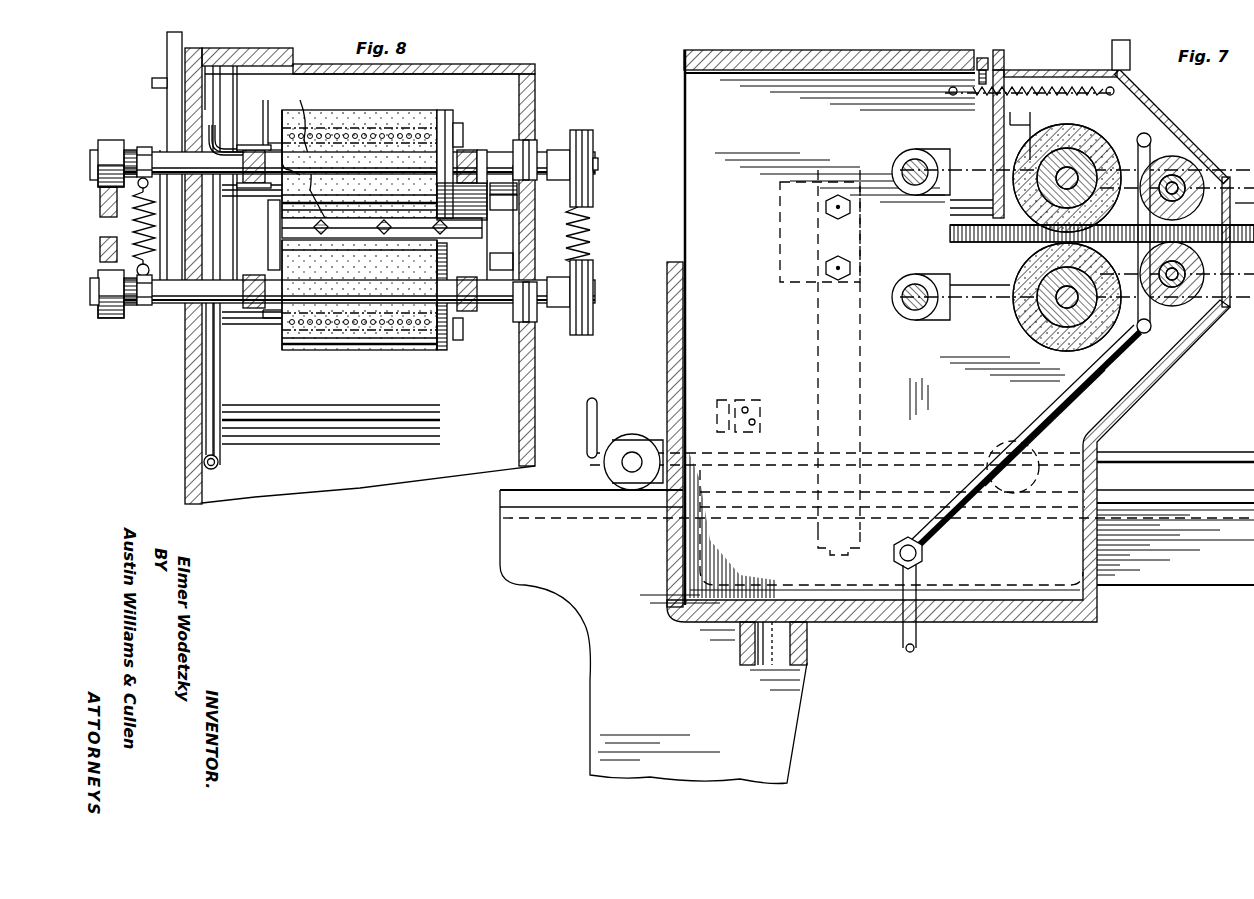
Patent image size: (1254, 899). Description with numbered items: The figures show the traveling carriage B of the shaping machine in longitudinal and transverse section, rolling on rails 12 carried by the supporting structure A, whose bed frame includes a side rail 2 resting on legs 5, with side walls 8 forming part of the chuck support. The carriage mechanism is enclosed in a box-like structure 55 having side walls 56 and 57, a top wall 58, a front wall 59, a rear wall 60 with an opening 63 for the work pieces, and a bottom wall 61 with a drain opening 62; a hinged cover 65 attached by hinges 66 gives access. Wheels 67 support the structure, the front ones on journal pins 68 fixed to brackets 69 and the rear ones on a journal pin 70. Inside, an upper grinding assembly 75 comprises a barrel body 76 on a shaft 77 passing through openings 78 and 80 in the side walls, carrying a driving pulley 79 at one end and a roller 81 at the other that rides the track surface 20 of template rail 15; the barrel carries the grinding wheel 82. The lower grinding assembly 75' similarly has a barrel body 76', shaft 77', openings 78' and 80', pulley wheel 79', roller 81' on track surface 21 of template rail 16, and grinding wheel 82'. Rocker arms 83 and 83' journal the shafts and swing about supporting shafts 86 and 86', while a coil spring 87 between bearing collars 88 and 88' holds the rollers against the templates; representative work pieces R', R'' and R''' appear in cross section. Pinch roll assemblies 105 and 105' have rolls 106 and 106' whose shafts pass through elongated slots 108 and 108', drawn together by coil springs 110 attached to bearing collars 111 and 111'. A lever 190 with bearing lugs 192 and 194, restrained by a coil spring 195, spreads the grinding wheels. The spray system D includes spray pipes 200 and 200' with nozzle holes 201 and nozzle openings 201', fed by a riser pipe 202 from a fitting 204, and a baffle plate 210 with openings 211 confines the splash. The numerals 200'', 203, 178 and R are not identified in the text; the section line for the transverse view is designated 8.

In FIG. 7, the side rail 2 is at (500, 506).
In FIG. 7, the legs 5 is at (772, 765).
In FIG. 7, the side walls 8 is at (945, 41).
In FIG. 7, the rails 12 is at (565, 490).
In FIG. 8, the template rail 15 is at (101, 211).
In FIG. 7, the template rail 15 is at (1246, 177).
In FIG. 8, the template rail 16 is at (120, 249).
In FIG. 8, the track surface 20 is at (95, 150).
In FIG. 7, the track surface 20 is at (951, 172).
In FIG. 8, the track surface 21 is at (113, 294).
In FIG. 7, the box-like structure 55 is at (676, 94).
In FIG. 8, the side wall 56 is at (187, 401).
In FIG. 7, the side wall 56 is at (688, 135).
In FIG. 8, the side wall 57 is at (536, 90).
In FIG. 7, the top wall 58 is at (822, 54).
In FIG. 7, the front wall 59 is at (1142, 386).
In FIG. 7, the rear wall 60 is at (668, 320).
In FIG. 7, the bottom wall 61 is at (1018, 622).
In FIG. 7, the drain opening 62 is at (808, 650).
In FIG. 7, the opening 63 is at (686, 243).
In FIG. 7, the hinged cover 65 is at (1128, 86).
In FIG. 7, the hinges 66 is at (1002, 58).
In FIG. 7, the wheels 67 is at (632, 436).
In FIG. 7, the journal pins 68 is at (632, 475).
In FIG. 7, the brackets 69 is at (620, 420).
In FIG. 7, the journal pin 70 is at (1016, 498).
In FIG. 8, the upper grinding assembly 75 is at (359, 148).
In FIG. 7, the upper grinding assembly 75 is at (992, 256).
In FIG. 8, the lower grinding assembly 75' is at (359, 317).
In FIG. 7, the lower grinding assembly 75' is at (1044, 324).
In FIG. 8, the barrel body 76 is at (469, 212).
In FIG. 7, the barrel body 76 is at (1067, 165).
In FIG. 7, the barrel body 76' is at (1067, 313).
In FIG. 8, the shaft 77 is at (357, 152).
In FIG. 7, the shaft 77 is at (1070, 153).
In FIG. 8, the shaft 77' is at (357, 323).
In FIG. 7, the shaft 77' is at (1042, 311).
In FIG. 8, the opening 78 is at (541, 146).
In FIG. 8, the opening 78' is at (542, 315).
In FIG. 8, the driving pulley 79 is at (584, 164).
In FIG. 8, the pulley wheel 79' is at (587, 295).
In FIG. 8, the opening 80 is at (226, 123).
In FIG. 8, the opening 80' is at (174, 316).
In FIG. 8, the roller 81 is at (117, 143).
In FIG. 8, the roller 81' is at (115, 331).
In FIG. 8, the grinding wheel 82 is at (457, 119).
In FIG. 7, the grinding wheel 82 is at (1102, 146).
In FIG. 8, the grinding wheel 82' is at (440, 351).
In FIG. 8, the rocker arms 83 is at (364, 145).
In FIG. 7, the rocker arms 83 is at (920, 152).
In FIG. 8, the rocker arm 83' is at (372, 318).
In FIG. 7, the rocker arm 83' is at (949, 327).
In FIG. 7, the supporting shaft 86 is at (906, 168).
In FIG. 7, the supporting shaft 86' is at (908, 297).
In FIG. 8, the coil spring 87 is at (134, 230).
In FIG. 8, the bearing collar 88 is at (149, 146).
In FIG. 8, the bearing collar 88' is at (139, 315).
In FIG. 7, the pinch roll assembly 105 is at (1199, 161).
In FIG. 7, the lower pinch roll assembly 105' is at (1200, 313).
In FIG. 7, the roll 106 is at (1210, 173).
In FIG. 7, the roll 106' is at (1206, 306).
In FIG. 7, the elongated slots 108 is at (1197, 180).
In FIG. 7, the elongated slots 108' is at (1170, 287).
In FIG. 8, the coil springs 110 is at (590, 230).
In FIG. 7, the bearing collar 111 is at (1102, 220).
In FIG. 7, the bearing collar 111' is at (1224, 266).
In FIG. 7, the switch 178 is at (756, 400).
In FIG. 8, the lever 190 is at (167, 50).
In FIG. 7, the lever 190 is at (1130, 45).
In FIG. 7, the bearing lug 192 is at (996, 208).
In FIG. 7, the bearing lug 194 is at (1012, 297).
In FIG. 7, the coil spring 195 is at (1040, 84).
In FIG. 8, the spray pipe 200 is at (260, 113).
In FIG. 7, the spray pipe 200 is at (1198, 131).
In FIG. 8, the lower spray pipe 200' is at (289, 346).
In FIG. 7, the lower spray pipe 200' is at (1188, 369).
In FIG. 8, the roller frame 200'' is at (487, 237).
In FIG. 8, the nozzle holes 201 is at (353, 238).
In FIG. 7, the nozzle holes 201 is at (1170, 209).
In FIG. 7, the nozzle openings 201' is at (1192, 375).
In FIG. 8, the riser pipe 202 is at (222, 233).
In FIG. 8, the lever rod 203 is at (206, 438).
In FIG. 7, the lever rod 203 is at (964, 521).
In FIG. 7, the fitting 204 is at (924, 557).
In FIG. 8, the baffle plate 210 is at (275, 254).
In FIG. 7, the baffle plate 210 is at (1006, 126).
In FIG. 8, the openings 211 is at (297, 216).
In FIG. 7, the openings 211 is at (920, 285).
In FIG. 7, the supporting structure A is at (813, 719).
In FIG. 8, the traveling carriage B is at (527, 48).
In FIG. 7, the traveling carriage B is at (1120, 434).
In FIG. 8, the spray system D is at (221, 485).
In FIG. 7, the spray system D is at (930, 648).
In FIG. 7, the record strip R is at (957, 208).
In FIG. 8, the work piece R' is at (330, 227).
In FIG. 8, the work piece R'' is at (395, 227).
In FIG. 8, the work piece R''' is at (456, 227).